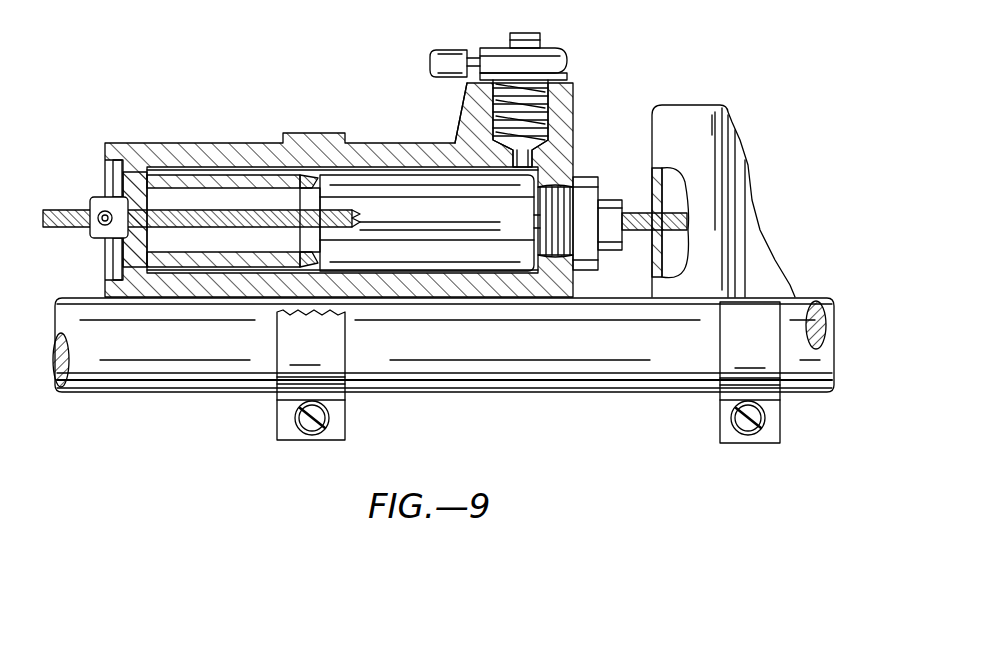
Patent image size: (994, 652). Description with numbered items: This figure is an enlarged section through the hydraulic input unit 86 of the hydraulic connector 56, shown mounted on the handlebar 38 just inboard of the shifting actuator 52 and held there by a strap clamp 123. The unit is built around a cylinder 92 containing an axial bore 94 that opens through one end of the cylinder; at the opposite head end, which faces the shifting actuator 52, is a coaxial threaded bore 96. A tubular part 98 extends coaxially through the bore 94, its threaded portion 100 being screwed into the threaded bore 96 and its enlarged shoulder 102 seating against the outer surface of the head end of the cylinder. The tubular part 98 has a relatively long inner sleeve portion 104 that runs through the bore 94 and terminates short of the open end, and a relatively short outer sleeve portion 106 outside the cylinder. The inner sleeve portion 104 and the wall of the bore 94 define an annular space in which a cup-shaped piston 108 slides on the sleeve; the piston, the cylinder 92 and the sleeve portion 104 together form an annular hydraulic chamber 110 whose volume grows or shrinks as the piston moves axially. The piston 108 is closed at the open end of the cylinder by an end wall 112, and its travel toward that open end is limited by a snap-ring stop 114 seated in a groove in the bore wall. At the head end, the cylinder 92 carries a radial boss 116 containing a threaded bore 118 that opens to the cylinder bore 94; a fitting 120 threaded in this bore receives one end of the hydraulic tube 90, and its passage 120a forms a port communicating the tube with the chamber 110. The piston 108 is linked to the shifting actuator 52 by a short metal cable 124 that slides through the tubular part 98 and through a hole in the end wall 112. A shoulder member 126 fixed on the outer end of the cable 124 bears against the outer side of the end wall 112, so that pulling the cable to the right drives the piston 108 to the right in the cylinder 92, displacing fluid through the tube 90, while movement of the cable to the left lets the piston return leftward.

The handlebar 38 is at (636, 396).
The shifting actuator 52 is at (700, 104).
The hydraulic connector 56 is at (421, 226).
The hydraulic input unit 86 is at (258, 140).
The hydraulic tube 90 is at (455, 50).
The cylinder 92 is at (196, 160).
The axial bore 94 is at (432, 180).
The threaded bore 96 is at (575, 270).
The tubular part 98 is at (452, 218).
The threaded portion 100 is at (533, 232).
The enlarged shoulder 102 is at (585, 178).
The inner sleeve portion 104 is at (415, 225).
The outer sleeve portion 106 is at (603, 200).
The cup-shaped piston 108 is at (175, 185).
The annular hydraulic chamber 110 is at (352, 183).
The end wall 112 is at (170, 232).
The snap-ring stop 114 is at (110, 178).
The radial boss 116 is at (572, 85).
The threaded bore 118 is at (466, 96).
The fitting 120 is at (568, 60).
The passage 120a is at (548, 150).
The strap clamp 123 is at (277, 425).
The metal cable 124 is at (676, 228).
The shoulder member 126 is at (95, 240).